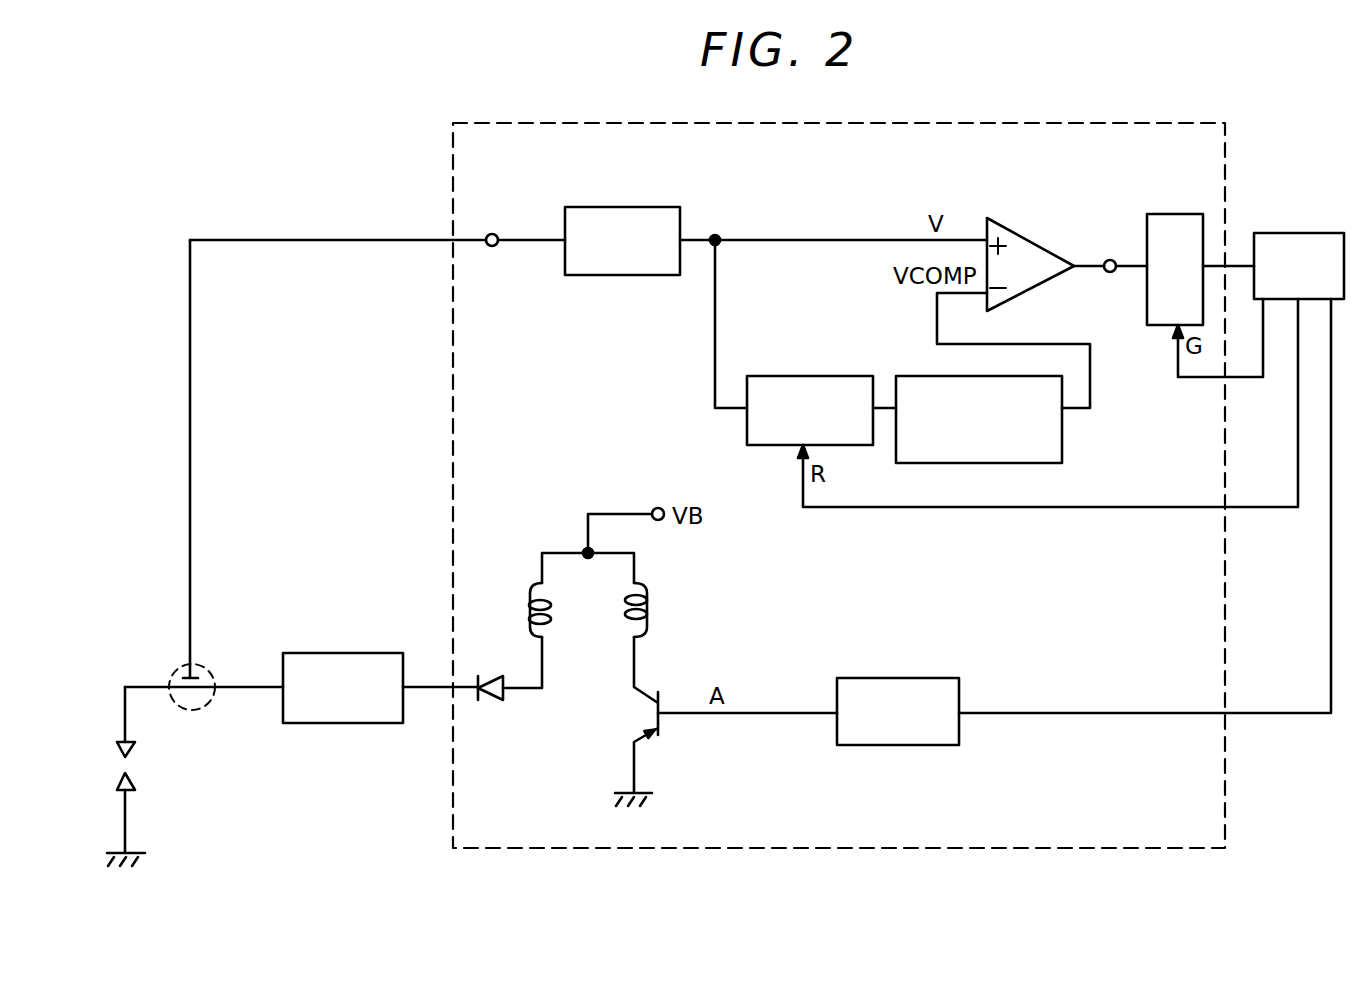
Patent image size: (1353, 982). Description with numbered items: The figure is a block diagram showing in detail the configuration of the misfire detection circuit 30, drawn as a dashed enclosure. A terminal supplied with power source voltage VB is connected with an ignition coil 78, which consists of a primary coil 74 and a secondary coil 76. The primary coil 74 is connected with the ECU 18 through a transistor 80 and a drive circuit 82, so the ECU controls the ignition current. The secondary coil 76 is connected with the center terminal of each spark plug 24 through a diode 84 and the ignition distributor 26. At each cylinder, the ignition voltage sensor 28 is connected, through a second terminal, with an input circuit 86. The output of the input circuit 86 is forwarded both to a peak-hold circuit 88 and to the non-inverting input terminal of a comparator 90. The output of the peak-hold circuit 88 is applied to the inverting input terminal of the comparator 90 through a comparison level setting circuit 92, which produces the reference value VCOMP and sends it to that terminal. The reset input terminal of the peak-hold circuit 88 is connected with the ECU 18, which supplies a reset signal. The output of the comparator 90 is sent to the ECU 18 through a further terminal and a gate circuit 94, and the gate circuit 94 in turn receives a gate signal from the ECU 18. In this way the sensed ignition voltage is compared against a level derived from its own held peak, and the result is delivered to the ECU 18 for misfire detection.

The ECU 18 is at (1300, 233).
The spark plug 24 is at (137, 768).
The ignition distributor 26 is at (350, 653).
The ignition voltage sensor 28 is at (216, 672).
The misfire detection circuit 30 is at (453, 143).
The primary coil 74 is at (658, 605).
The secondary coil 76 is at (528, 613).
The ignition coil 78 is at (652, 571).
The transistor 80 is at (666, 704).
The drive circuit 82 is at (900, 678).
The diode 84 is at (503, 702).
The input circuit 86 is at (627, 207).
The peak-hold circuit 88 is at (812, 376).
The comparator 90 is at (1030, 234).
The comparison level setting circuit 92 is at (981, 463).
The gate circuit 94 is at (1190, 214).